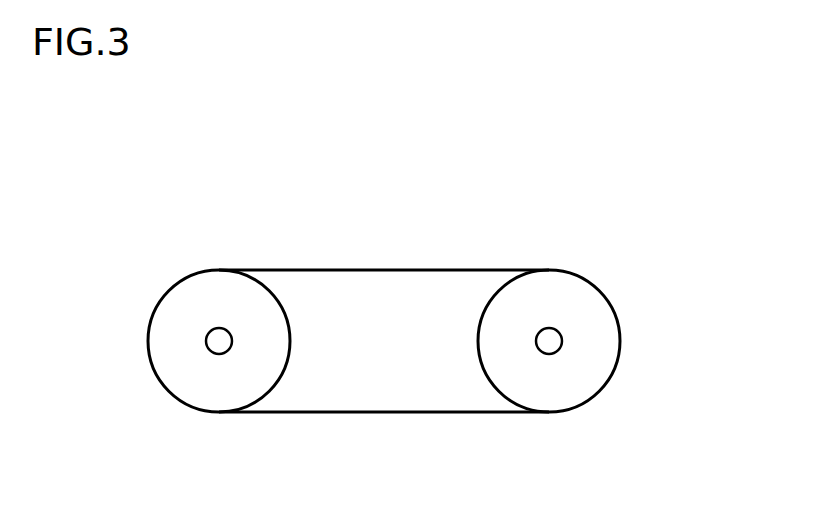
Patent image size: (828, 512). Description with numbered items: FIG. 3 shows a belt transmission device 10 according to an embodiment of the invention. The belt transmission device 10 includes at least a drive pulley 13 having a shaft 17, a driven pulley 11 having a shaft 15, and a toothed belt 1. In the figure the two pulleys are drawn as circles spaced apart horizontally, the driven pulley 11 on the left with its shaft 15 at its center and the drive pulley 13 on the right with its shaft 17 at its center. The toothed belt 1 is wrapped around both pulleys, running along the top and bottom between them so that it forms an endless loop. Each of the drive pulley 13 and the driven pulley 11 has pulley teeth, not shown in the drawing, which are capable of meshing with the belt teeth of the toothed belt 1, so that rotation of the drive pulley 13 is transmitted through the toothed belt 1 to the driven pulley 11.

The belt transmission device 10 is at (250, 193).
The toothed belt 1 is at (383, 270).
The driven pulley 11 is at (170, 318).
The drive pulley 13 is at (607, 347).
The shaft 15 is at (219, 354).
The shaft 17 is at (549, 354).